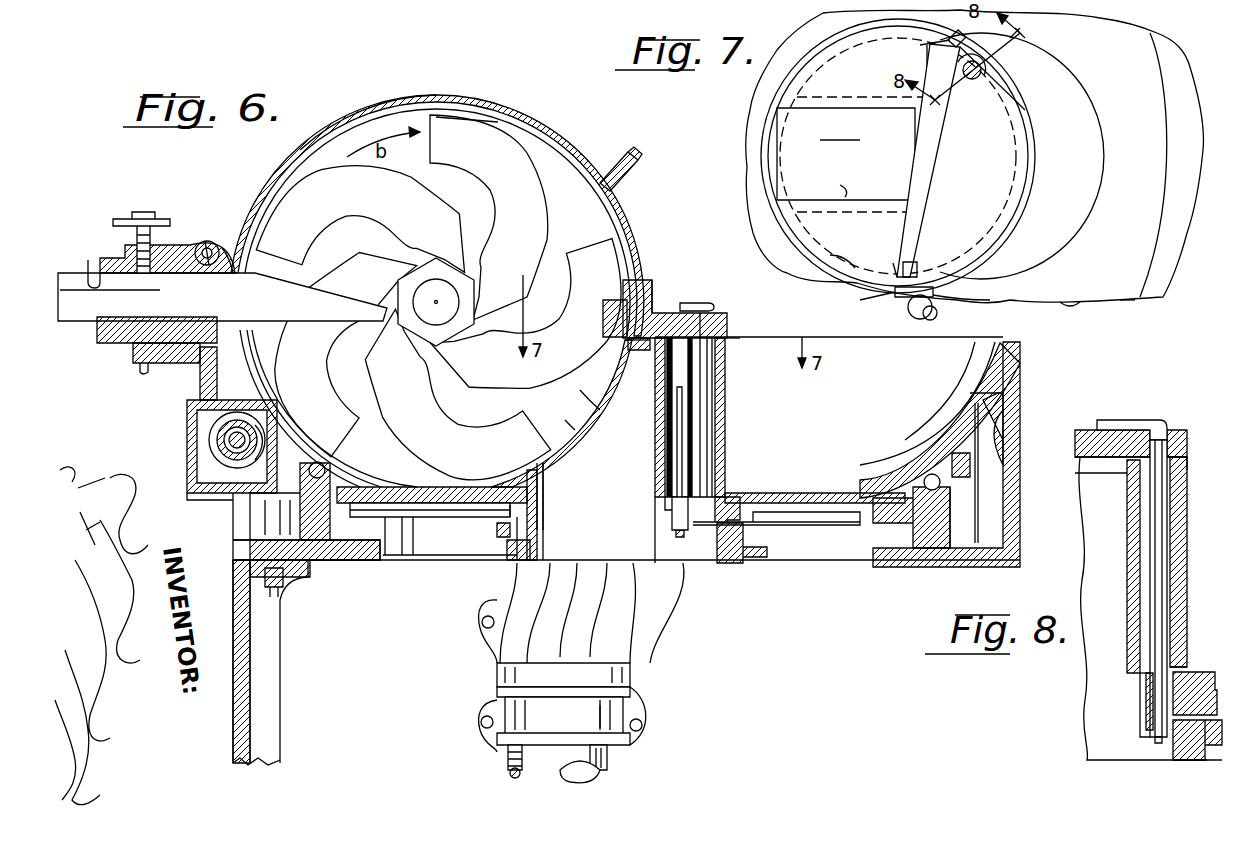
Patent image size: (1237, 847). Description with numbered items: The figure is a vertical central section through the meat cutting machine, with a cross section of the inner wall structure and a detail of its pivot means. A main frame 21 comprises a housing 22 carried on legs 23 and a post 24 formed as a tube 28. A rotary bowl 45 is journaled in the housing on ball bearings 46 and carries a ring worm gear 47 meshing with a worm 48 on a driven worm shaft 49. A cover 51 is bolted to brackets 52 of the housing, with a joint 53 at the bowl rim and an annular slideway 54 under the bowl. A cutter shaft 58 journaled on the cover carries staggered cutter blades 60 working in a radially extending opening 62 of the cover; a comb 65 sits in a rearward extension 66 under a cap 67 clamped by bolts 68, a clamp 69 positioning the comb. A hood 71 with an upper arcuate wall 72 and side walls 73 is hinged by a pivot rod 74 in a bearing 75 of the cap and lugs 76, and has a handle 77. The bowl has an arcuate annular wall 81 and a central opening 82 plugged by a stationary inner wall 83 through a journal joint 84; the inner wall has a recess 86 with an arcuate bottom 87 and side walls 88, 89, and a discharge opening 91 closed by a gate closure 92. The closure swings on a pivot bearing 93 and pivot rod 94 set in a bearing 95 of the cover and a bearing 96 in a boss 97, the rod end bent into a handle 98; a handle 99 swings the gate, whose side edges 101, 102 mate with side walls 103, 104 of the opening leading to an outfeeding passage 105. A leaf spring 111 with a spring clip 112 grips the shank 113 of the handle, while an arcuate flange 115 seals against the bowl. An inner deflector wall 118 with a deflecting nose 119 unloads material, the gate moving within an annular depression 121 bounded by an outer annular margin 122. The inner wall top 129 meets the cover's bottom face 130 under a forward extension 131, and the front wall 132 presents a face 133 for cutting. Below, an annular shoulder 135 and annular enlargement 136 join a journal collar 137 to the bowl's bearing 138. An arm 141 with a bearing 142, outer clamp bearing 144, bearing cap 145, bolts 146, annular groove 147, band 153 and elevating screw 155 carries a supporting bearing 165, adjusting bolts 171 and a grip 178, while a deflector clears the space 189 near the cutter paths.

In FIG. 6, the main frame 21 is at (232, 562).
In FIG. 6, the housing 22 is at (240, 520).
In FIG. 6, the legs 23 is at (270, 670).
In FIG. 6, the post 24 is at (606, 760).
In FIG. 6, the tube 28 is at (600, 778).
In FIG. 6, the rotary bowl 45 is at (1020, 350).
In FIG. 7, the rotary bowl 45 is at (1125, 300).
In FIG. 6, the ball bearings 46 is at (942, 488).
In FIG. 6, the ring worm gear 47 is at (290, 501).
In FIG. 6, the worm 48 is at (208, 435).
In FIG. 6, the worm shaft 49 is at (226, 448).
In FIG. 6, the cover 51 is at (662, 308).
In FIG. 8, the cover 51 is at (1188, 455).
In FIG. 6, the brackets 52 is at (175, 372).
In FIG. 6, the joint 53 is at (250, 320).
In FIG. 6, the annular slideway 54 is at (1015, 394).
In FIG. 6, the cutter shaft 58 is at (430, 290).
In FIG. 6, the cutter blades 60 is at (518, 204).
In FIG. 6, the opening 62 is at (640, 268).
In FIG. 6, the comb 65 is at (119, 295).
In FIG. 6, the rearward extension 66 is at (118, 343).
In FIG. 6, the cap 67 is at (114, 256).
In FIG. 6, the bolts 68 is at (135, 371).
In FIG. 6, the clamp 69 is at (140, 212).
In FIG. 6, the hood 71 is at (545, 125).
In FIG. 6, the upper arcuate wall 72 is at (420, 98).
In FIG. 6, the side walls 73 is at (490, 112).
In FIG. 6, the pivot rod 74 is at (200, 243).
In FIG. 6, the bearing 75 is at (212, 242).
In FIG. 6, the lugs 76 is at (232, 240).
In FIG. 6, the handle 77 is at (637, 165).
In FIG. 6, the annular wall 81 is at (935, 462).
In FIG. 6, the central opening 82 is at (768, 522).
In FIG. 6, the inner wall 83 is at (530, 570).
In FIG. 7, the inner wall 83 is at (760, 85).
In FIG. 8, the inner wall 83 is at (1092, 665).
In FIG. 6, the journal joint 84 is at (745, 505).
In FIG. 6, the recess 86 is at (590, 393).
In FIG. 7, the recess 86 is at (815, 110).
In FIG. 6, the bottom 87 is at (570, 420).
In FIG. 7, the bottom 87 is at (785, 162).
In FIG. 6, the side wall 88 is at (555, 415).
In FIG. 7, the side wall 88 is at (845, 108).
In FIG. 7, the side wall 89 is at (860, 185).
In FIG. 6, the discharge opening 91 is at (668, 505).
In FIG. 7, the discharge opening 91 is at (893, 265).
In FIG. 8, the discharge opening 91 is at (1130, 680).
In FIG. 6, the closure 92 is at (724, 418).
In FIG. 7, the closure 92 is at (1035, 168).
In FIG. 8, the closure 92 is at (1185, 535).
In FIG. 6, the pivot bearing 93 is at (680, 430).
In FIG. 7, the pivot bearing 93 is at (985, 83).
In FIG. 8, the pivot bearing 93 is at (1150, 553).
In FIG. 6, the pivot rod 94 is at (685, 537).
In FIG. 7, the pivot rod 94 is at (970, 80).
In FIG. 8, the pivot rod 94 is at (1160, 578).
In FIG. 8, the bearing 95 is at (1188, 448).
In FIG. 6, the bearing 96 is at (672, 525).
In FIG. 8, the bearing 96 is at (1143, 708).
In FIG. 8, the boss 97 is at (1146, 690).
In FIG. 6, the handle 98 is at (684, 310).
In FIG. 8, the handle 98 is at (1120, 424).
In FIG. 7, the handle 99 is at (935, 300).
In FIG. 7, the side edge 101 is at (966, 36).
In FIG. 7, the side edge 102 is at (920, 272).
In FIG. 7, the side wall 103 is at (935, 42).
In FIG. 7, the side wall 104 is at (860, 265).
In FIG. 6, the outfeeding passage 105 is at (660, 620).
In FIG. 7, the outfeeding passage 105 is at (913, 142).
In FIG. 7, the leaf spring 111 is at (865, 300).
In FIG. 7, the spring clip 112 is at (938, 316).
In FIG. 7, the shank 113 is at (985, 300).
In FIG. 6, the arcuate flange 115 is at (728, 497).
In FIG. 7, the arcuate flange 115 is at (1028, 200).
In FIG. 8, the arcuate flange 115 is at (1185, 665).
In FIG. 6, the deflector wall 118 is at (676, 390).
In FIG. 7, the deflector wall 118 is at (925, 205).
In FIG. 7, the deflecting nose 119 is at (985, 50).
In FIG. 6, the annular depression 121 is at (800, 495).
In FIG. 7, the annular depression 121 is at (1080, 302).
In FIG. 6, the outer annular margin 122 is at (838, 498).
In FIG. 7, the outer annular margin 122 is at (1172, 168).
In FIG. 6, the top 129 is at (638, 352).
In FIG. 7, the top 129 is at (780, 217).
In FIG. 6, the bottom face 130 is at (708, 322).
In FIG. 6, the forward extension 131 is at (728, 327).
In FIG. 6, the front wall 132 is at (652, 284).
In FIG. 6, the face 133 is at (605, 310).
In FIG. 6, the annular shoulder 135 is at (538, 512).
In FIG. 6, the annular enlargement 136 is at (538, 540).
In FIG. 8, the annular enlargement 136 is at (1173, 748).
In FIG. 6, the journal collar 137 is at (530, 493).
In FIG. 6, the bearing 138 is at (500, 520).
In FIG. 6, the arm 141 is at (510, 598).
In FIG. 6, the bearing 142 is at (640, 667).
In FIG. 6, the outer clamp bearing 144 is at (635, 690).
In FIG. 6, the bearing cap 145 is at (648, 700).
In FIG. 8, the bearing cap 145 is at (1200, 675).
In FIG. 6, the bolts 146 is at (645, 725).
In FIG. 6, the annular groove 147 is at (602, 690).
In FIG. 6, the band 153 is at (545, 675).
In FIG. 6, the elevating screw 155 is at (507, 762).
In FIG. 6, the supporting bearing 165 is at (505, 558).
In FIG. 8, the supporting bearing 165 is at (1205, 762).
In FIG. 6, the adjusting bolts 171 is at (580, 598).
In FIG. 6, the grip 178 is at (770, 553).
In FIG. 6, the space 189 is at (460, 512).